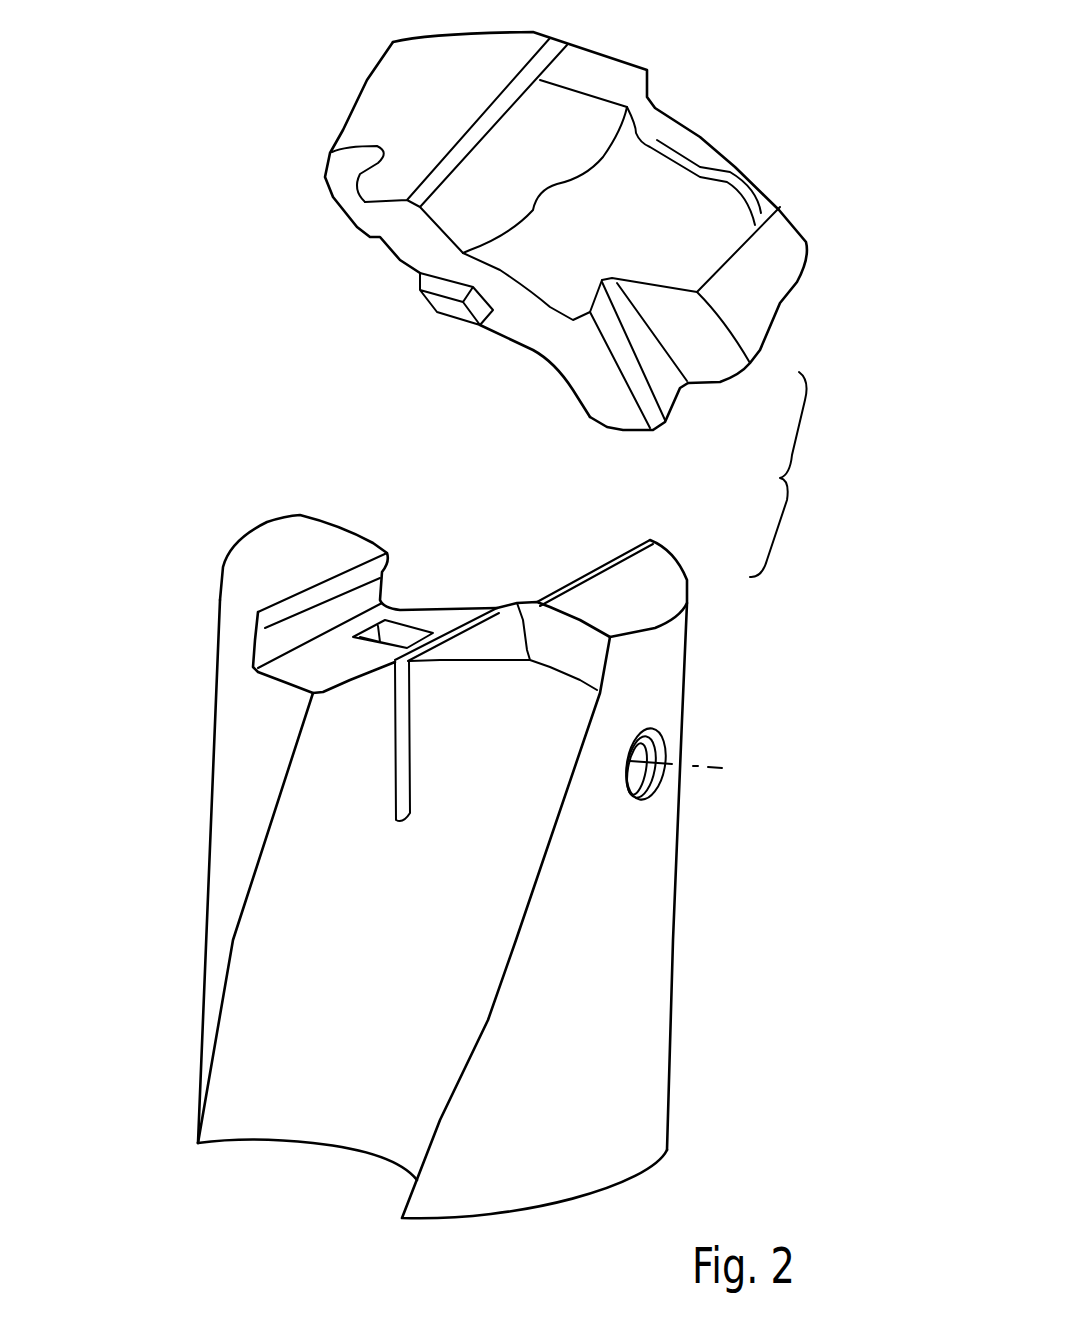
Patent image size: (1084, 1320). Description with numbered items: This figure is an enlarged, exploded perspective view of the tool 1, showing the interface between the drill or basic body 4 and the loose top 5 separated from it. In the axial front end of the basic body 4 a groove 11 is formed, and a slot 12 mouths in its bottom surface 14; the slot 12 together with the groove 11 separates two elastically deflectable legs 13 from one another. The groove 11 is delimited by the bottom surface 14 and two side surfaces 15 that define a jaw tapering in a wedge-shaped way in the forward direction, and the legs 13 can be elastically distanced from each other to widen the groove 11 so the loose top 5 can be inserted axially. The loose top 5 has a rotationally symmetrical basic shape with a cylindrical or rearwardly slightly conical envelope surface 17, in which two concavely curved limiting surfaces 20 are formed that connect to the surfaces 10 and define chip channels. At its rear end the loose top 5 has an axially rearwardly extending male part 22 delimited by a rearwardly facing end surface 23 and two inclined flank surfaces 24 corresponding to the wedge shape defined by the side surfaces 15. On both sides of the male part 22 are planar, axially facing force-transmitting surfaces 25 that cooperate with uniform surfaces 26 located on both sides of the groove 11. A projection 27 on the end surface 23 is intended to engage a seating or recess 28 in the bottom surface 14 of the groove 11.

The cutting tool 1 is at (255, 415).
The basic body 4 is at (200, 860).
The loose top 5 is at (822, 222).
The surfaces 10 is at (392, 993).
The groove 11 is at (480, 593).
The slot 12 is at (403, 763).
The legs 13 is at (235, 643).
The bottom surface 14 is at (350, 679).
The side surfaces 15 is at (370, 583).
The envelope surface 17 is at (768, 304).
The limiting surfaces 20 is at (654, 257).
The male part 22 is at (627, 430).
The end surface 23 is at (540, 341).
The flank surfaces 24 is at (363, 167).
The force-transmitting surfaces 25 is at (708, 350).
The surfaces 26 is at (300, 582).
The projection 27 is at (440, 323).
The recess 28 is at (409, 619).